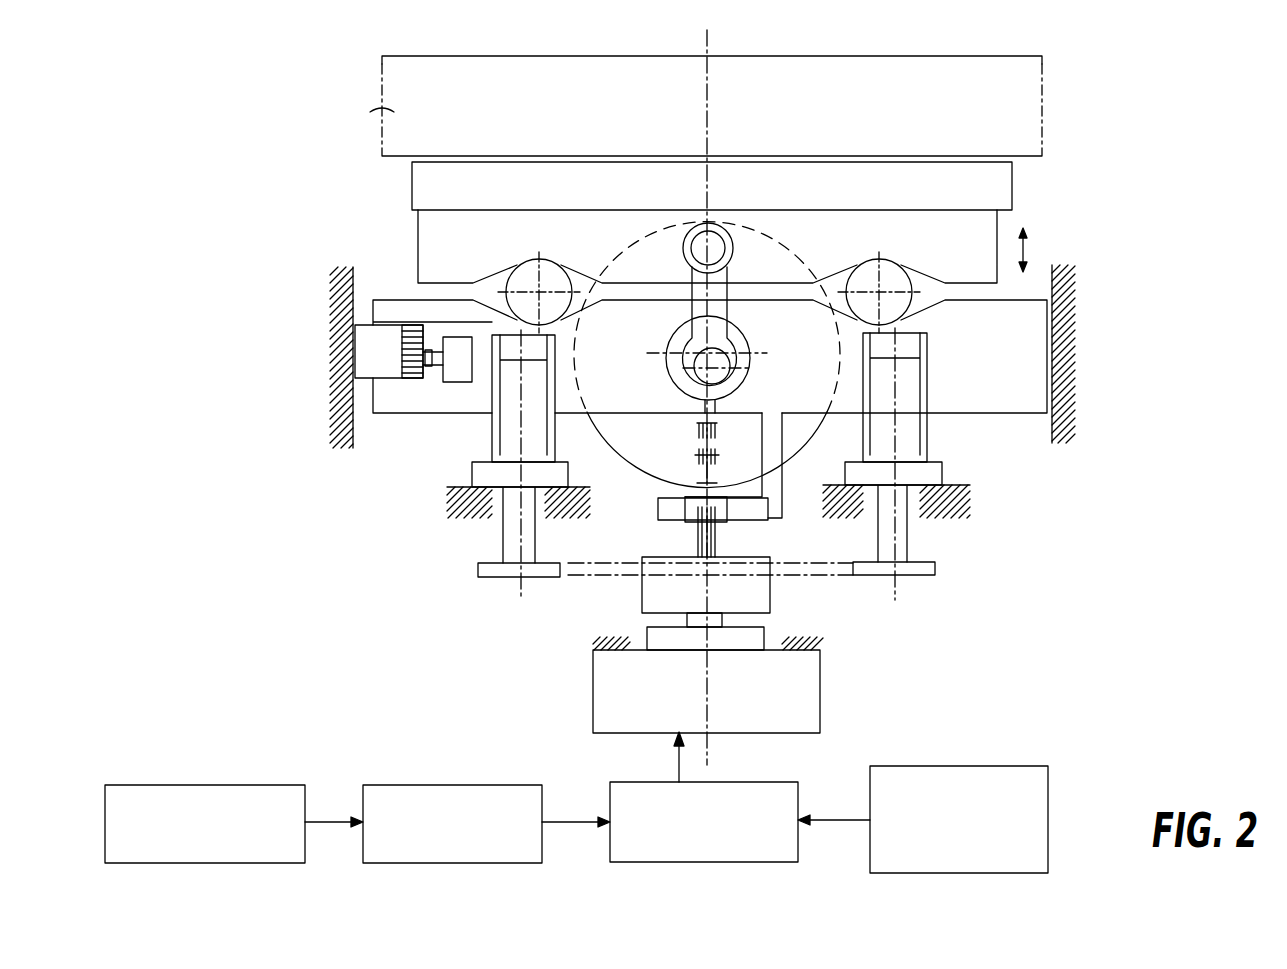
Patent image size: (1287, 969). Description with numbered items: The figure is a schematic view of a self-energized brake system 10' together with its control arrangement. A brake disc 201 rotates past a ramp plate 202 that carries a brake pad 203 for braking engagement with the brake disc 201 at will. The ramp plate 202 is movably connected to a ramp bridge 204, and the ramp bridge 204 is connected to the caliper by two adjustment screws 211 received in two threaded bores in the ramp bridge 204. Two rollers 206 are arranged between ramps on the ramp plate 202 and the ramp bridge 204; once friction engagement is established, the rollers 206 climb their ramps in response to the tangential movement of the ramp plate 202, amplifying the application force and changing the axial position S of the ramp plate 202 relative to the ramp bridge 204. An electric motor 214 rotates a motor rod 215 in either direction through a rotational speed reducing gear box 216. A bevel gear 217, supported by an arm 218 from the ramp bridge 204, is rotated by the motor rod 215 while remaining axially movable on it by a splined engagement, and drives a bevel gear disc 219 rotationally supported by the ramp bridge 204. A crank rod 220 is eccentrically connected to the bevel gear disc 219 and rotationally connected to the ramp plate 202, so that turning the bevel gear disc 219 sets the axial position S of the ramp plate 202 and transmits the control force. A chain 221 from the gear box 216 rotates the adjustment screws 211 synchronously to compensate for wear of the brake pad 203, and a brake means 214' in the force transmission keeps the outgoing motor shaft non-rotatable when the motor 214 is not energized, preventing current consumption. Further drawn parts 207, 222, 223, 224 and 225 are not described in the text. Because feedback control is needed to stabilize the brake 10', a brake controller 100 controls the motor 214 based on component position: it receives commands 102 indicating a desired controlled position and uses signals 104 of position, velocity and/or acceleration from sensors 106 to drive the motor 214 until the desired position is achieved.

The brake system 10' is at (203, 251).
The brake controller 100 is at (632, 782).
The commands 102 is at (1048, 797).
The signals 104 is at (446, 785).
The position, velocity and/or acceleration sensors 106 is at (196, 785).
The brake disc 201 is at (398, 108).
The ramp plate 202 is at (437, 241).
The brake pad 203 is at (430, 178).
The ramp bridge 204 is at (383, 308).
The rollers 206 is at (552, 278).
The wall 207 is at (340, 433).
The adjustment screws 211 is at (497, 457).
The electric motor 214 is at (748, 691).
The brake means 214' is at (756, 639).
The motor rod 215 is at (712, 537).
The gear box 216 is at (757, 597).
The bevel gear 217 is at (665, 497).
The arm 218 is at (777, 493).
The bevel gear disc 219 is at (635, 442).
The crank rod 220 is at (725, 268).
The chain 221 is at (597, 567).
The spring/gear element 222 is at (403, 332).
The mount block 223 is at (375, 358).
The shaft 224 is at (448, 360).
The stop block 225 is at (465, 382).
The axial position S is at (1030, 245).